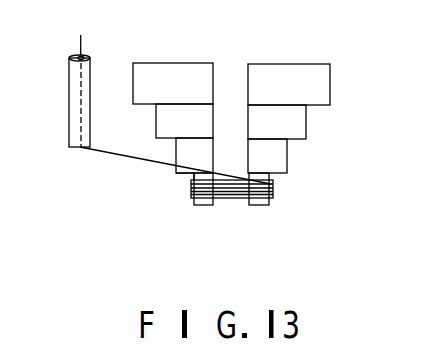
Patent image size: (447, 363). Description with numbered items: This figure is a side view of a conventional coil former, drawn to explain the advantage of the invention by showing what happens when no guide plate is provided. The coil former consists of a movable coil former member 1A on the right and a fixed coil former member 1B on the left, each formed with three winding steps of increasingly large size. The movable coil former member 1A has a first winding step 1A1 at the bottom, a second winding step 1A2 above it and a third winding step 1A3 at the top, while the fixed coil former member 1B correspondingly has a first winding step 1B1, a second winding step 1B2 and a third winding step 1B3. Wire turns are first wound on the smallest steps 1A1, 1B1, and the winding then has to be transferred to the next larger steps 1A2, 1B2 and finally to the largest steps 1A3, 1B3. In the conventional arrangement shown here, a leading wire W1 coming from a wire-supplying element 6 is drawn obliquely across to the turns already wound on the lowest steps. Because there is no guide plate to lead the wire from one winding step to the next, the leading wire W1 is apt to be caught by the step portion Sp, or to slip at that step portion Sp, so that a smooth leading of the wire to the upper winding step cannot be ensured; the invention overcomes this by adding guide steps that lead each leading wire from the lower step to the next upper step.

The wire supply bobbin 6 is at (69, 90).
The leading wire W1 is at (117, 158).
The fixed coil former member 1B is at (184, 167).
The first winding step of the fixed coil former member 1B1 is at (192, 203).
The second winding step of the fixed coil former member 1B2 is at (175, 152).
The third winding step of the fixed coil former member 1B3 is at (156, 118).
The movable coil former member 1A is at (315, 168).
The first winding step of the movable coil former member 1A1 is at (272, 200).
The second winding step of the movable coil former member 1A2 is at (287, 155).
The third winding step of the movable coil former member 1A3 is at (306, 118).
The step portion Sp is at (183, 173).